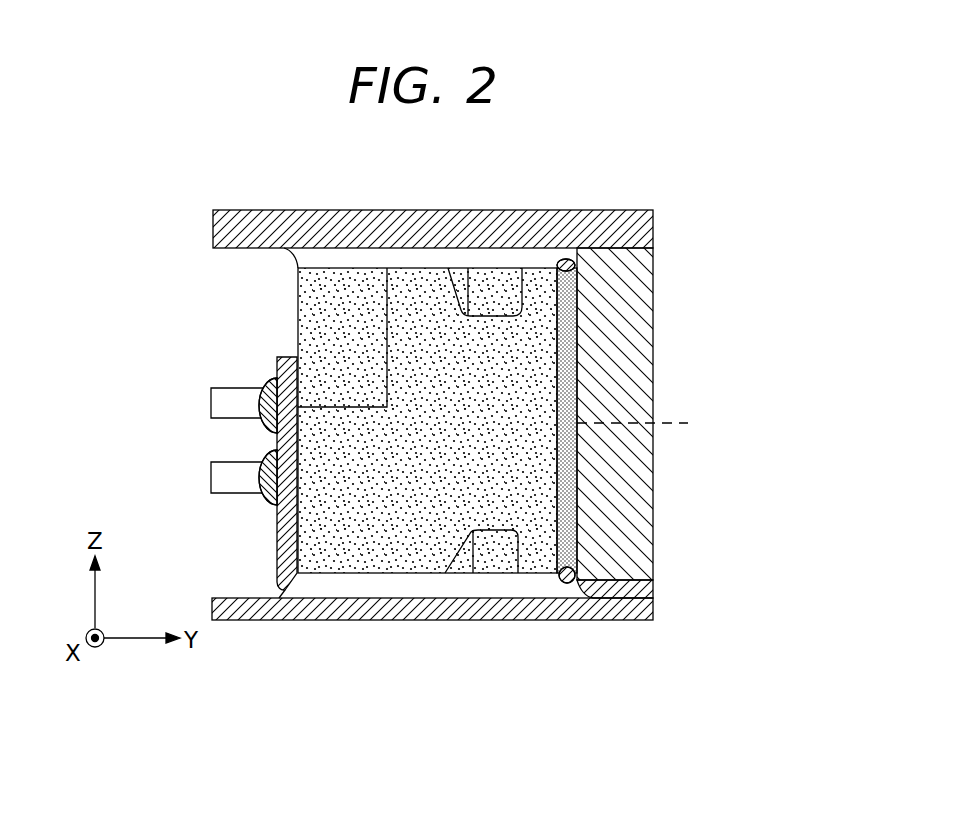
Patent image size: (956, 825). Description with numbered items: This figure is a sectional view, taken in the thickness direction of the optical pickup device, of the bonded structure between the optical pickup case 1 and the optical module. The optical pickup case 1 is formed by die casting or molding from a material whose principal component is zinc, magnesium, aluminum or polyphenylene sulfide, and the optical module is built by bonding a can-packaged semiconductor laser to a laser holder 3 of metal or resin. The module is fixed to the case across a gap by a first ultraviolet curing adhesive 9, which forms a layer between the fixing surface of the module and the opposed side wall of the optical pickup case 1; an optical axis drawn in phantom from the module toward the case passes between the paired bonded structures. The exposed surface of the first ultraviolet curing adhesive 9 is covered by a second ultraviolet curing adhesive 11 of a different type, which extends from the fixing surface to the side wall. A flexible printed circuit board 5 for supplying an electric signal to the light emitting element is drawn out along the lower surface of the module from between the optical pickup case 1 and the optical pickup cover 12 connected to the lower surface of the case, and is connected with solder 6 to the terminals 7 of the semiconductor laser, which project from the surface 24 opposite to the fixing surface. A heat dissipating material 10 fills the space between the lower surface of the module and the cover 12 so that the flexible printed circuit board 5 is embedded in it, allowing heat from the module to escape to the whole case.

The optical pickup case 1 is at (637, 343).
The laser holder 3 is at (400, 286).
The flexible printed circuit board 5 is at (280, 530).
The solder 6 is at (268, 385).
The terminals 7 is at (232, 398).
The first ultraviolet curing adhesive 9 is at (567, 493).
The heat dissipating material 10 is at (497, 259).
The second ultraviolet curing adhesive 11 is at (565, 262).
The optical pickup cover 12 is at (245, 232).
The surface opposite to the fixing surface 24 is at (298, 320).